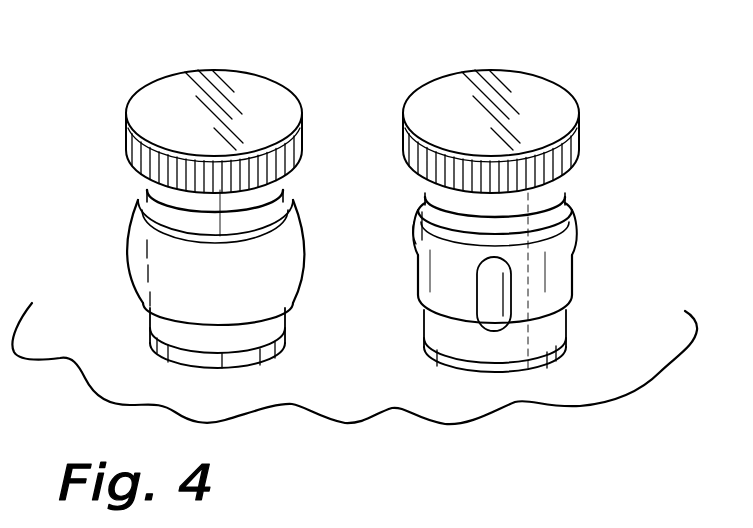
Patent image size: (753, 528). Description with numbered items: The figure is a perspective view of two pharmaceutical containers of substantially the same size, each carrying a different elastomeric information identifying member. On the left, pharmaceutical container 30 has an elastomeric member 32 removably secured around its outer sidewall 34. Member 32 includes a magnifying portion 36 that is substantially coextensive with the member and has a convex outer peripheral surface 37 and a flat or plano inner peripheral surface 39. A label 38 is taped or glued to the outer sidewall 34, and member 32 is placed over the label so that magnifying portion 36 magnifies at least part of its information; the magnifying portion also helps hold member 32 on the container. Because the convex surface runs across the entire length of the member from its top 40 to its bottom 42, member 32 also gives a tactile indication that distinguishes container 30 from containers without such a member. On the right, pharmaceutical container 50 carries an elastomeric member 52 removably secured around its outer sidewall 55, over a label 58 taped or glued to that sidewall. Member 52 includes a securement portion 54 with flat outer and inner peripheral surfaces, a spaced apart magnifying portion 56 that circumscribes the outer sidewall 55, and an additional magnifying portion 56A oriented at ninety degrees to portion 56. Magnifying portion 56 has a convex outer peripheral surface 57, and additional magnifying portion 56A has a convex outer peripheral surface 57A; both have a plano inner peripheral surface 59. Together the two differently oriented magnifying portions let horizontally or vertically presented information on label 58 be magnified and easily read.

The pharmaceutical container 30 is at (124, 108).
The elastomeric member 32 is at (124, 204).
The outer sidewall 34 is at (145, 185).
The magnifying portion 36 is at (137, 255).
The convex outer peripheral surface 37 is at (138, 293).
The label 38 is at (268, 207).
The plano inner peripheral surface 39 is at (147, 243).
The top 40 is at (292, 207).
The bottom 42 is at (268, 333).
The pharmaceutical container 50 is at (594, 125).
The elastomeric member 52 is at (586, 243).
The securement portion 54 is at (552, 275).
The outer sidewall 55 is at (560, 185).
The magnifying portion 56 is at (573, 212).
The additional magnifying portion 56A is at (497, 308).
The convex outer peripheral surface 57 is at (415, 236).
The convex outer peripheral surface 57A is at (490, 281).
The label 58 is at (460, 340).
The plano inner peripheral surface 59 is at (412, 240).